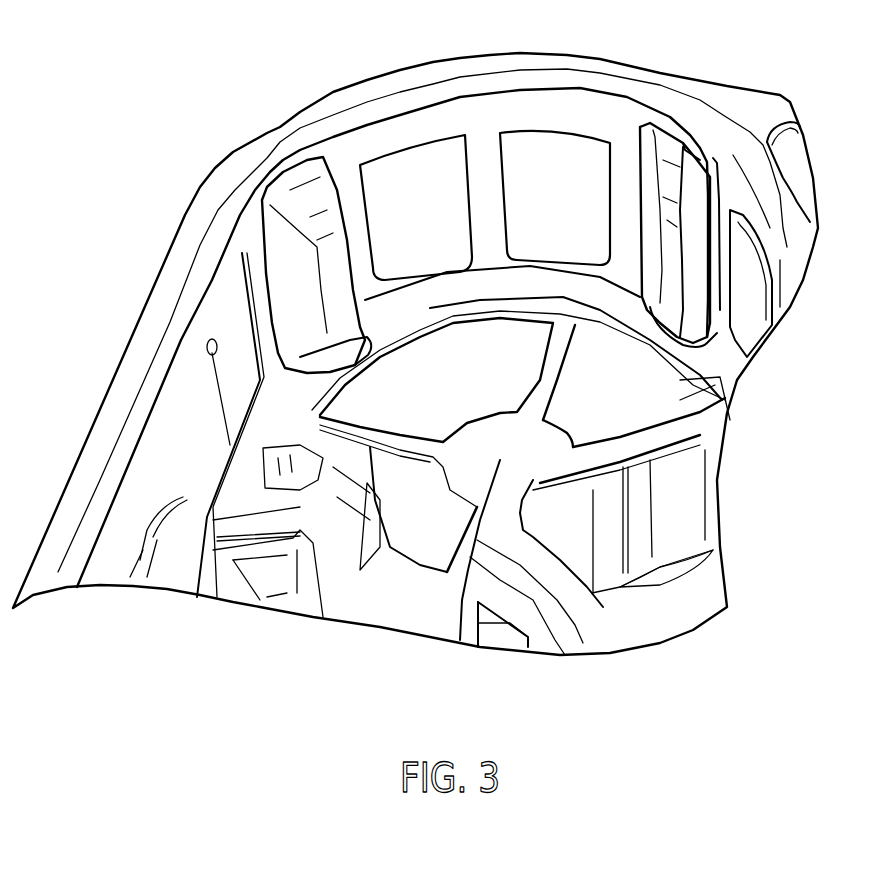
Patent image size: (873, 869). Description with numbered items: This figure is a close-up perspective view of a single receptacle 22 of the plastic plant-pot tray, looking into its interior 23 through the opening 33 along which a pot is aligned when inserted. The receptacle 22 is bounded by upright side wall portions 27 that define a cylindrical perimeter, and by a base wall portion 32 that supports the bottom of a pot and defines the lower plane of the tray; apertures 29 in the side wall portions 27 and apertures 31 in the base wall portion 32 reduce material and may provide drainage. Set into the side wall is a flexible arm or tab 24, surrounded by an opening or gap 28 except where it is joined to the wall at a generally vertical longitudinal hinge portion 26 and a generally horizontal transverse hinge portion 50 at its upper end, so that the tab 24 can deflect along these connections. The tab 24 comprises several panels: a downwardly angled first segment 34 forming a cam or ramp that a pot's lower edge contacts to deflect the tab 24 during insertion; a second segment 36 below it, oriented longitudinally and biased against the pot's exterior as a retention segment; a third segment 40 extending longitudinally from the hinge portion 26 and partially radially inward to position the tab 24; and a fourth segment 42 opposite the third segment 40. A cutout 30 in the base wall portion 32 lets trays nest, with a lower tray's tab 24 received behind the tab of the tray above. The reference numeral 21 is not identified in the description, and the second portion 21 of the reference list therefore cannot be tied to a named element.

The vehicle body roof panel 21 is at (230, 178).
The receptacle 22 is at (520, 150).
The interior 23 is at (258, 375).
The flexible arm or tab 24 is at (278, 157).
The longitudinal hinge portion 26 is at (257, 250).
The side wall portion 27 is at (722, 185).
The opening or gap 28 is at (710, 208).
The aperture 29 is at (208, 345).
The cutout 30 is at (350, 350).
The aperture 31 is at (413, 433).
The base wall portion 32 is at (455, 323).
The opening 33 is at (593, 443).
The first segment 34 is at (327, 187).
The second segment 36 is at (340, 283).
The third segment 40 is at (277, 283).
The fourth segment 42 is at (693, 247).
The transverse hinge portion 50 is at (270, 178).